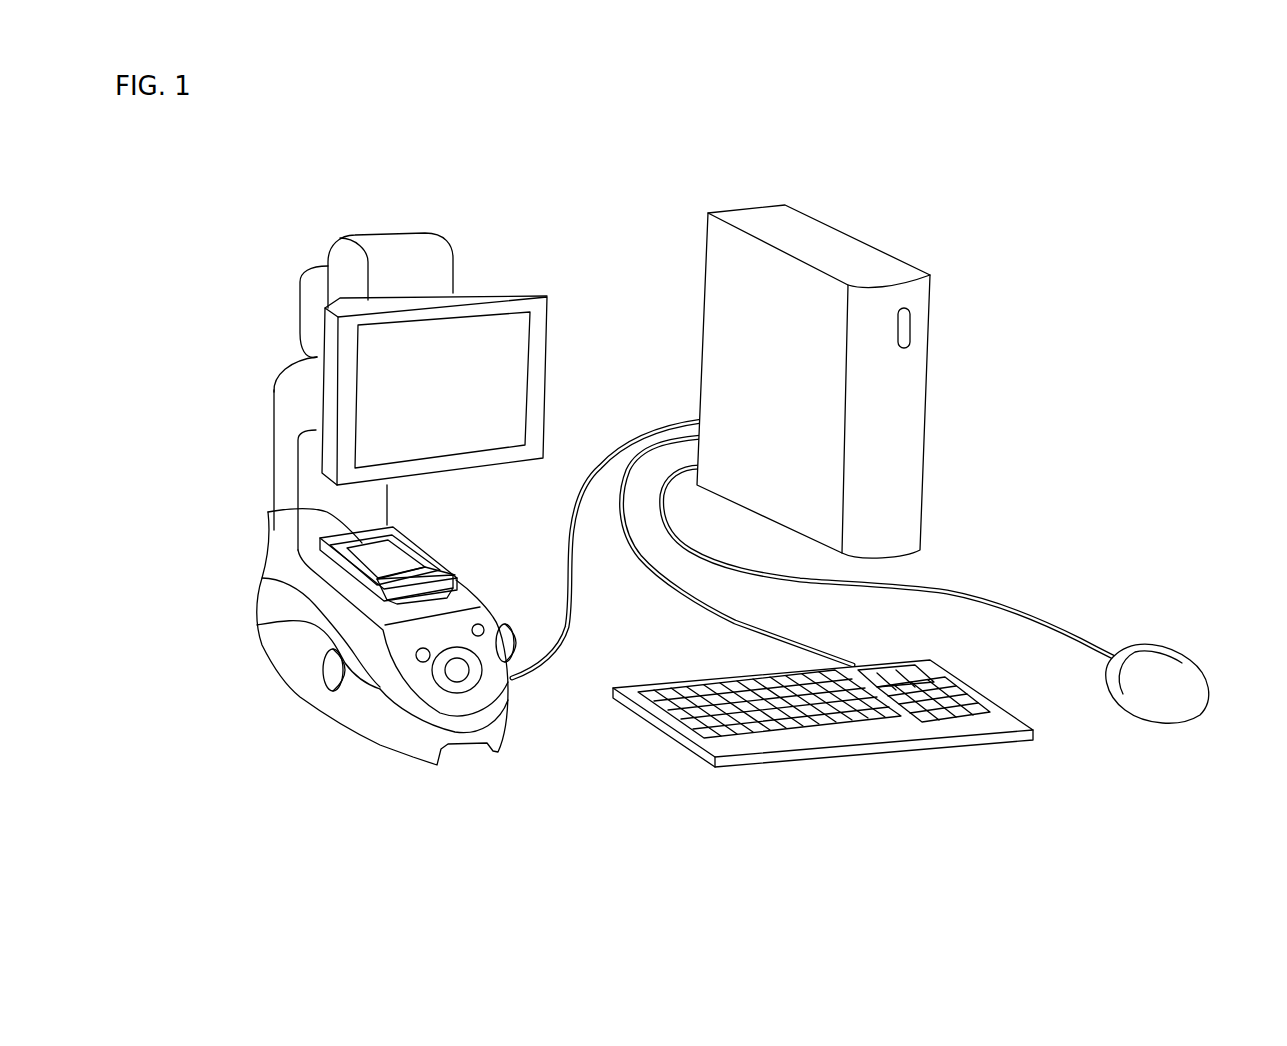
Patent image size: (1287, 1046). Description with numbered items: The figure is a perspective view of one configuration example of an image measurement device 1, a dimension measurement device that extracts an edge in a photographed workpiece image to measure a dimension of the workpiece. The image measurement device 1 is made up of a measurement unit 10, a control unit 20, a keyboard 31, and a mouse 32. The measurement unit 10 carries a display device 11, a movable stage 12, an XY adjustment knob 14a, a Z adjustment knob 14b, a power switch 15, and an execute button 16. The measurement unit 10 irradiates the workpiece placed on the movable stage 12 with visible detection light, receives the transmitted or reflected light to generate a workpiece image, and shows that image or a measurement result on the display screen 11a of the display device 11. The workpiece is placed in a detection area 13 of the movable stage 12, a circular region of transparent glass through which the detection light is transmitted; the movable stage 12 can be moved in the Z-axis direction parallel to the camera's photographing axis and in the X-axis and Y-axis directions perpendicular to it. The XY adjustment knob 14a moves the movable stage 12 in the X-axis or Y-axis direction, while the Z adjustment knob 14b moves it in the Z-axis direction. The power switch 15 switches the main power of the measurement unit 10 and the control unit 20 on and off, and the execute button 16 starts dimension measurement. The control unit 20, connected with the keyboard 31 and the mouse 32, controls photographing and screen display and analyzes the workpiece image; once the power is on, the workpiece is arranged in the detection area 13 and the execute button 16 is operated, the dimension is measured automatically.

The image measurement device 1 is at (1265, 142).
The measurement unit 10 is at (400, 233).
The display device 11 is at (465, 356).
The display screen 11a is at (513, 367).
The movable stage 12 is at (368, 541).
The detection area 13 is at (275, 528).
The XY adjustment knob 14a is at (505, 617).
The Z adjustment knob 14b is at (259, 623).
The power switch 15 is at (481, 624).
The execute button 16 is at (448, 675).
The control unit 20 is at (820, 219).
The keyboard 31 is at (943, 747).
The mouse 32 is at (1180, 660).